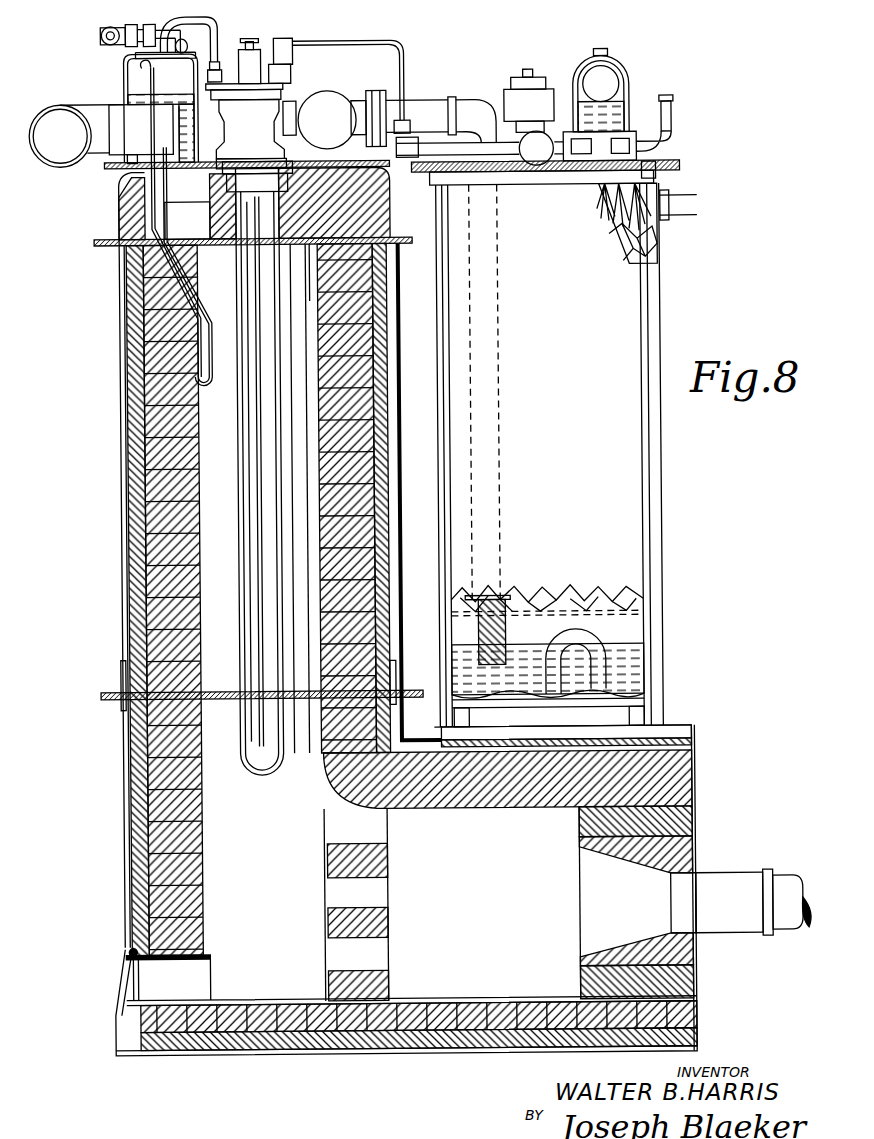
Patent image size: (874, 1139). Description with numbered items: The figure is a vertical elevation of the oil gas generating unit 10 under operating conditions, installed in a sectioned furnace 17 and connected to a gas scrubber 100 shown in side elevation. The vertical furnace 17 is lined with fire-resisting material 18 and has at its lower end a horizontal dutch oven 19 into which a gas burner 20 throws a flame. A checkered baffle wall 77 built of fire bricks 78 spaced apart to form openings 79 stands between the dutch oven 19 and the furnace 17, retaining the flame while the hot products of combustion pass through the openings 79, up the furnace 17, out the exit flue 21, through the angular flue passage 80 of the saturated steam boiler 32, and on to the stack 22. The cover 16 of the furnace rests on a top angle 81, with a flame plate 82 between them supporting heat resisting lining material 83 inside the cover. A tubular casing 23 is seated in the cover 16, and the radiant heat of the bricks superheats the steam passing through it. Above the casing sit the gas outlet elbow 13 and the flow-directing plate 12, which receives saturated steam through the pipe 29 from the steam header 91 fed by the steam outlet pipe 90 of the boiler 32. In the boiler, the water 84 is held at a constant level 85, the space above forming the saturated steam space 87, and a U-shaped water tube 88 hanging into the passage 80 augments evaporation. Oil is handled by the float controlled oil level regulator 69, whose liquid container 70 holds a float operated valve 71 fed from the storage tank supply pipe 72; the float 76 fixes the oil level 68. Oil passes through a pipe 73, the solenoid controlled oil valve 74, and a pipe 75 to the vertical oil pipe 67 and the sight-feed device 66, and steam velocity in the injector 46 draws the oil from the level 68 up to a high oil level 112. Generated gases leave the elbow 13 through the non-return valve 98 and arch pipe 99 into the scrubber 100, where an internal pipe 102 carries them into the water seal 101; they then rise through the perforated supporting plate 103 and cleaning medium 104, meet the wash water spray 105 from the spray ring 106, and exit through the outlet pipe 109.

The oil gas generating unit 10 is at (116, 601).
The flow-directing plate 12 is at (282, 85).
The gas outlet elbow 13 is at (251, 134).
The cover 16 is at (120, 193).
The furnace 17 is at (118, 507).
The fire-resisting material 18 is at (327, 760).
The dutch oven 19 is at (453, 1030).
The gas burner 20 is at (780, 886).
The exit flue 21 is at (187, 220).
The stack 22 is at (63, 164).
The tubular casing 23 is at (258, 763).
The pipe 29 is at (225, 25).
The saturated steam boiler 32 is at (128, 65).
The injector 46 is at (262, 42).
The sight-feed device 66 is at (292, 42).
The oil pipe 67 is at (410, 68).
The fixed oil level 68 is at (762, 88).
The float controlled oil level regulator 69 is at (636, 53).
The liquid container 70 is at (632, 72).
The float operated valve 71 is at (633, 112).
The storage tank supply pipe 72 is at (680, 112).
The pipe 73 is at (562, 163).
The solenoid controlled oil valve 74 is at (535, 88).
The pipe 75 is at (518, 160).
The float 76 is at (605, 76).
The checkered baffle wall 77 is at (398, 905).
The fire bricks 78 is at (378, 987).
The openings 79 is at (337, 957).
The angular flue passage 80 is at (141, 134).
The top angle 81 is at (110, 241).
The flame plate 82 is at (299, 244).
The heat resisting lining material 83 is at (342, 228).
The water 84 is at (130, 83).
The constant level 85 is at (128, 90).
The saturated steam space 87 is at (160, 109).
The U-shaped water tube 88 is at (207, 385).
The steam outlet pipe 90 is at (160, 32).
The steam header 91 is at (105, 32).
The back-pressure or non-return valve 98 is at (332, 92).
The arch pipe 99 is at (430, 106).
The gas scrubber 100 is at (664, 292).
The water seal 101 is at (650, 663).
The internal pipe 102 is at (478, 638).
The perforated supporting plate 103 is at (660, 612).
The cleaning medium 104 is at (656, 245).
The wash water spray 105 is at (613, 197).
The spray ring 106 is at (641, 171).
The outlet pipe 109 is at (695, 205).
The high oil level 112 is at (522, 43).